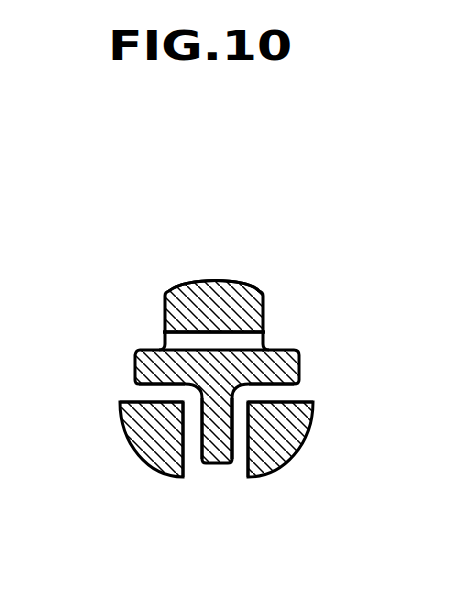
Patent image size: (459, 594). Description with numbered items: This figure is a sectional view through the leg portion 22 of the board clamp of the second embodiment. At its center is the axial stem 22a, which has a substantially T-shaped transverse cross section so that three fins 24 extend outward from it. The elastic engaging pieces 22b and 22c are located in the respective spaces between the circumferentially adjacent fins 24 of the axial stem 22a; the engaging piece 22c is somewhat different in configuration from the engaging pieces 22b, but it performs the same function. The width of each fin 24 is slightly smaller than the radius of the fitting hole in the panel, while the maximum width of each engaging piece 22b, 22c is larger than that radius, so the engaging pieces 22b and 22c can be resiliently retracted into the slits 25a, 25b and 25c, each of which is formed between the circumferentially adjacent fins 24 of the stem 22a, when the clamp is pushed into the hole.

The leg portion 22 is at (117, 352).
The axial stem 22a is at (188, 346).
The elastic engaging pieces 22b is at (133, 440).
The elastic engaging piece 22c is at (223, 285).
The fins 24 is at (296, 360).
The slit 25a is at (192, 450).
The slit 25b is at (152, 392).
The slit 25c is at (255, 342).